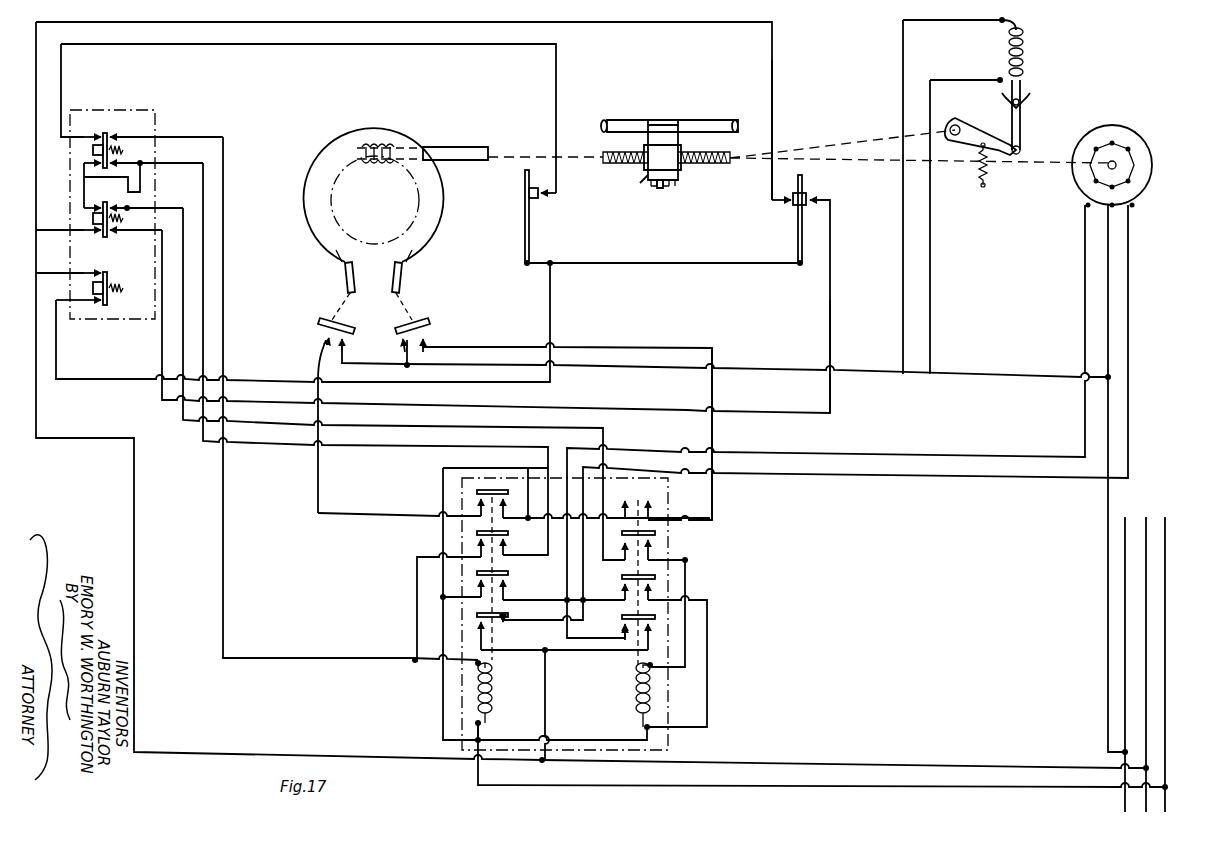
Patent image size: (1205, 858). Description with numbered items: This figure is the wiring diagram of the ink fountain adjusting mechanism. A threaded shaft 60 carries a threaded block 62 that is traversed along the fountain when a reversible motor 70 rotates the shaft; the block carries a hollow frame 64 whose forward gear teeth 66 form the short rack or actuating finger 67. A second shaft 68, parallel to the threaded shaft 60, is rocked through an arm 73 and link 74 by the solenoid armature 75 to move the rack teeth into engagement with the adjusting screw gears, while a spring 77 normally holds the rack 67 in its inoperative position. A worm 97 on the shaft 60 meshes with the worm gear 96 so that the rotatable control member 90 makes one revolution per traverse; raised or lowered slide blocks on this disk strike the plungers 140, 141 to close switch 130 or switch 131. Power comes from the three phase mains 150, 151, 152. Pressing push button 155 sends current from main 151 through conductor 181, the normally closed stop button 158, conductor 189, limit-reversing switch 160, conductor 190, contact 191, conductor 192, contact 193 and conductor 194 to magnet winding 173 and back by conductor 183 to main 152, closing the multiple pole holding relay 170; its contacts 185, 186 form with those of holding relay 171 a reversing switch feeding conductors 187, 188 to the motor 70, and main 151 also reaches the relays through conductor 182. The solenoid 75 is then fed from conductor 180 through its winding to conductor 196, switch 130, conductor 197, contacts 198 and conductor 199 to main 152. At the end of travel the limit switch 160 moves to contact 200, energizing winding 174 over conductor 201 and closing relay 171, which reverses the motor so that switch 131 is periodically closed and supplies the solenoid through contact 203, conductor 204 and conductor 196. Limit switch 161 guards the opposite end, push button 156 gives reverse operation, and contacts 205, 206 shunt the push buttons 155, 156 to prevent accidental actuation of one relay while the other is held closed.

The threaded shaft 60 is at (466, 147).
The threaded block 62 is at (680, 150).
The hollow frame 64 is at (668, 170).
The gear teeth 66 is at (661, 190).
The rack 67 is at (646, 177).
The second shaft 68 is at (708, 120).
The reversible motor 70 is at (1112, 125).
The arm 73 is at (972, 130).
The link 74 is at (1022, 122).
The solenoid armature 75 is at (1028, 72).
The spring 77 is at (990, 178).
The rotatable control member 90 is at (305, 226).
The worm gear 96 is at (338, 178).
The worm 97 is at (378, 145).
The switch 130 is at (326, 316).
The switch 131 is at (420, 316).
The actuating plunger 140 is at (340, 273).
The plunger 141 is at (408, 273).
The three phase main 150 is at (1125, 525).
The three phase main 151 is at (1146, 538).
The three phase main 152 is at (1165, 552).
The push button 155 is at (93, 153).
The push button 156 is at (93, 217).
The stop button 158 is at (93, 287).
The limit-reversing switch 160 is at (796, 230).
The limit switch 161 is at (540, 226).
The multiple pole holding relay 170 is at (410, 580).
The holding relay 171 is at (722, 577).
The holding relay magnet winding 173 is at (494, 702).
The holding relay magnet winding 174 is at (634, 688).
The conductor 180 is at (1104, 256).
The conductor 181 is at (140, 548).
The conductor 182 is at (548, 705).
The conductor 183 is at (878, 789).
The contacts 185 is at (505, 591).
The contacts 186 is at (505, 631).
The conductor 187 is at (915, 452).
The conductor 188 is at (916, 476).
The conductor 189 is at (128, 390).
The conductor 190 is at (776, 72).
The contact 191 is at (100, 240).
The conductor 192 is at (95, 190).
The contact 193 is at (122, 163).
The conductor 194 is at (196, 137).
The conductor 196 is at (900, 45).
The conductor 197 is at (314, 478).
The contacts 198 is at (476, 492).
The conductor 199 is at (455, 468).
The contact 200 is at (820, 200).
The conductor 201 is at (832, 305).
The contact 203 is at (608, 496).
The conductor 204 is at (714, 505).
The contact 205 is at (476, 537).
The contact 206 is at (656, 542).